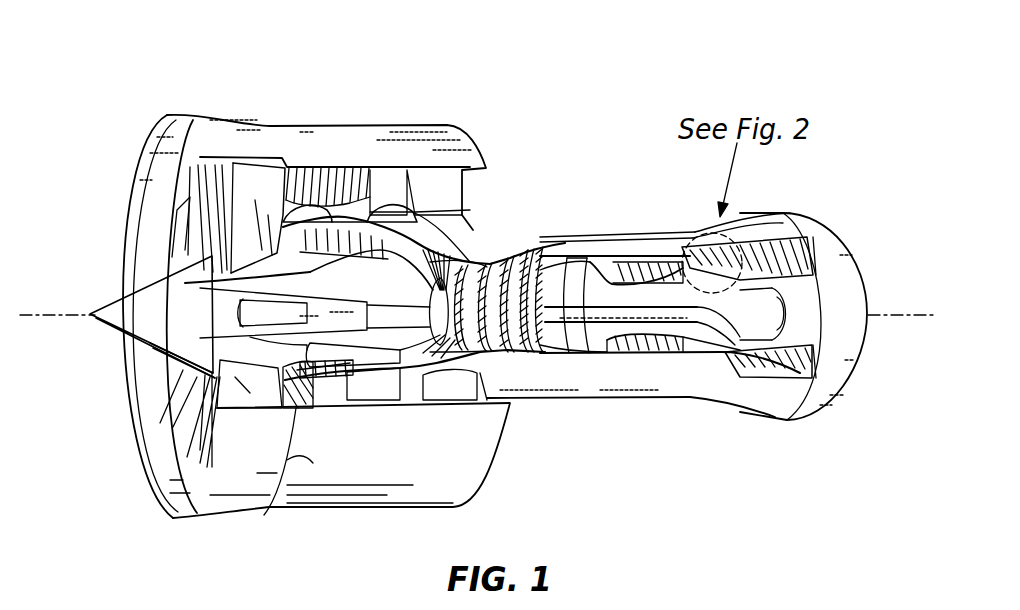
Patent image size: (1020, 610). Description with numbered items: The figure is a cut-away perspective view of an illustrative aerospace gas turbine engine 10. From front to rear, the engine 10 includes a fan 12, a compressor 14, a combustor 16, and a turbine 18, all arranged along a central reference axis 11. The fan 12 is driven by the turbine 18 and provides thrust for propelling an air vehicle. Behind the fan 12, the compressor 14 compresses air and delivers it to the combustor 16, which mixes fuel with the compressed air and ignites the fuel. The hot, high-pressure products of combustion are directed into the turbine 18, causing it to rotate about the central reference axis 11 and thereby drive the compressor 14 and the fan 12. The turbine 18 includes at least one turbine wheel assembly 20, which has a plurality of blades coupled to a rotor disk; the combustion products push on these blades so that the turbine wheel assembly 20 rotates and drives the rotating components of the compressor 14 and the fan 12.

The gas turbine engine 10 is at (607, 82).
The central reference axis 11 is at (61, 320).
The fan 12 is at (157, 213).
The compressor 14 is at (474, 251).
The combustor 16 is at (620, 262).
The turbine 18 is at (770, 230).
The turbine wheel assembly 20 is at (707, 258).